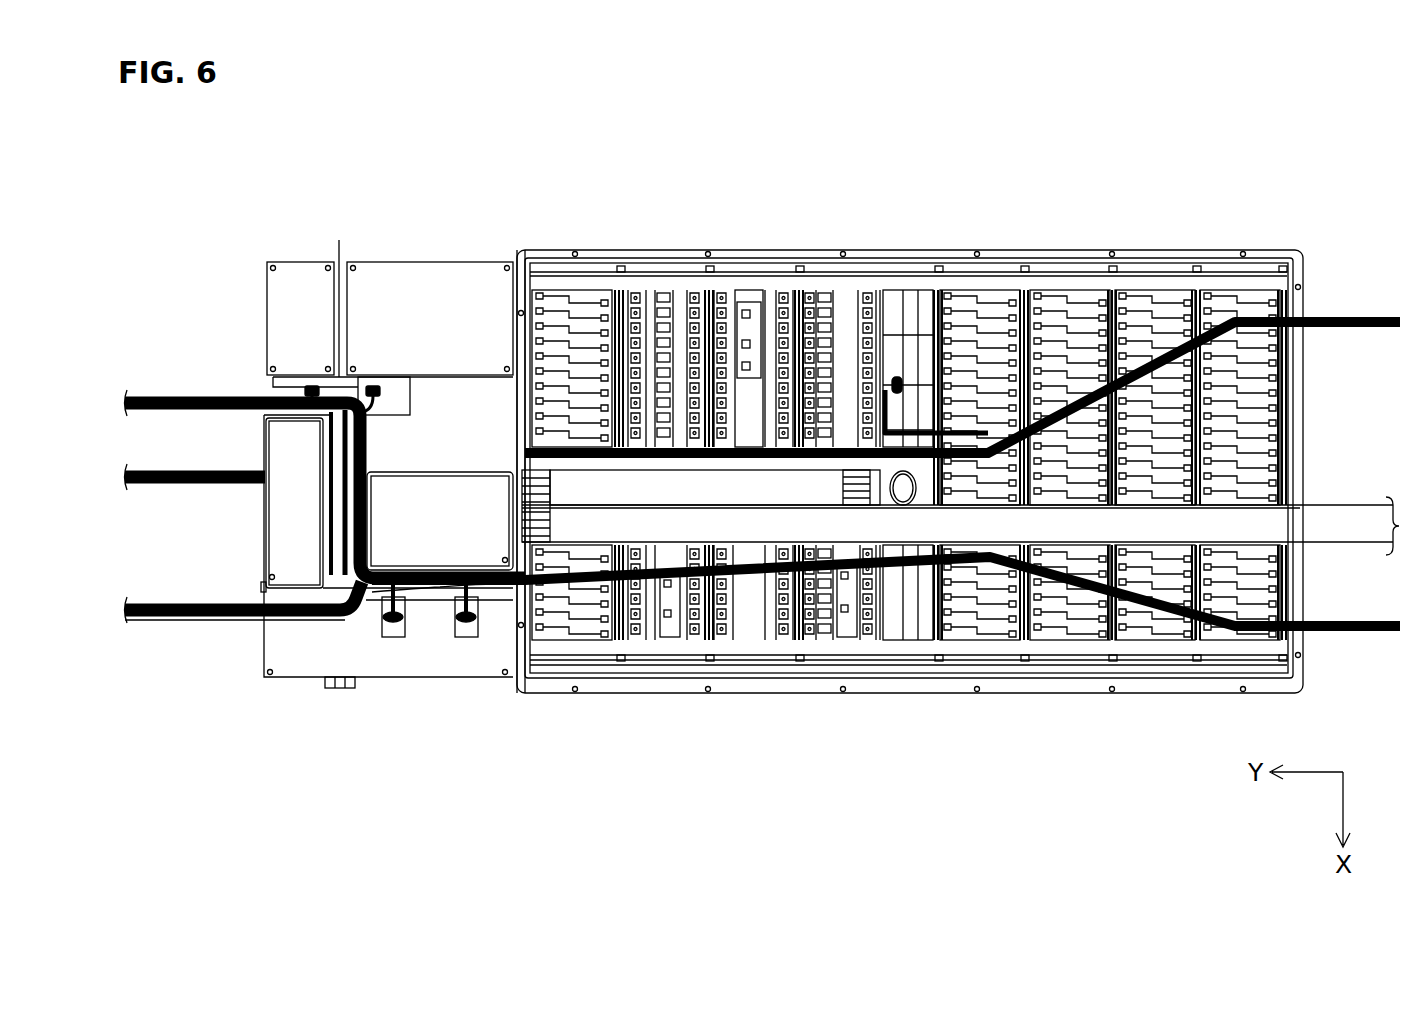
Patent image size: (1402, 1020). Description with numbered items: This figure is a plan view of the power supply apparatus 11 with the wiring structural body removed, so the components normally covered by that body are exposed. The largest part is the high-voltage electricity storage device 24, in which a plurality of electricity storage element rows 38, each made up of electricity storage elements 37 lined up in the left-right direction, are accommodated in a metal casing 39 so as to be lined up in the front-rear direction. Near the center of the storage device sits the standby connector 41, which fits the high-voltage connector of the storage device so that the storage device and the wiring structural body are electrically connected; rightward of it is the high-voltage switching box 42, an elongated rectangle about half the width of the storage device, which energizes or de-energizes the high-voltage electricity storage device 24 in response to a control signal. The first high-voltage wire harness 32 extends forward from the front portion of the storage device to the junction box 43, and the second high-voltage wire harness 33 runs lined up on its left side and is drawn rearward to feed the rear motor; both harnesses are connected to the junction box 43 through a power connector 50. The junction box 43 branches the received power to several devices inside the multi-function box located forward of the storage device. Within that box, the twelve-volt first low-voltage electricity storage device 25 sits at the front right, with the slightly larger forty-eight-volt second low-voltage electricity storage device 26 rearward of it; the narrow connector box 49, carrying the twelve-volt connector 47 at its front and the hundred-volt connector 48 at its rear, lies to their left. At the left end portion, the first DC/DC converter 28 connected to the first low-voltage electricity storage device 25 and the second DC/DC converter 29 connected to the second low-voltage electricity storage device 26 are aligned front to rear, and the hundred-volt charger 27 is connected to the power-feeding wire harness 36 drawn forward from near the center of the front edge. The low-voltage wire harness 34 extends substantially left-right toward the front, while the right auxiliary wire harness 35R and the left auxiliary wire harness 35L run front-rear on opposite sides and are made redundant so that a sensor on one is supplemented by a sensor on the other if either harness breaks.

The power supply apparatus 11 is at (1302, 194).
The high-voltage electricity storage device 24 is at (909, 390).
The first low-voltage electricity storage device 25 is at (300, 290).
The second low-voltage electricity storage device 26 is at (428, 290).
The 100-V charger 27 is at (292, 545).
The first DC/DC converter 28 is at (393, 632).
The second DC/DC converter 29 is at (465, 632).
The first high-voltage wire harness 32 is at (672, 485).
The second high-voltage wire harness 33 is at (1345, 518).
The low-voltage wire harness 34 is at (355, 497).
The right auxiliary wire harness 35R is at (183, 395).
The left auxiliary wire harness 35L is at (182, 620).
The power-feeding wire harness 36 is at (205, 470).
The electricity storage element 37 is at (577, 290).
The electricity storage element row 38 is at (909, 392).
The metal casing 39 is at (1067, 255).
The standby connector 41 is at (905, 497).
The high-voltage switching box 42 is at (918, 363).
The junction box 43 is at (340, 588).
The 12-V connector 47 is at (300, 390).
The 100-V connector 48 is at (375, 384).
The connector box 49 is at (400, 394).
The power connector 50 is at (521, 528).